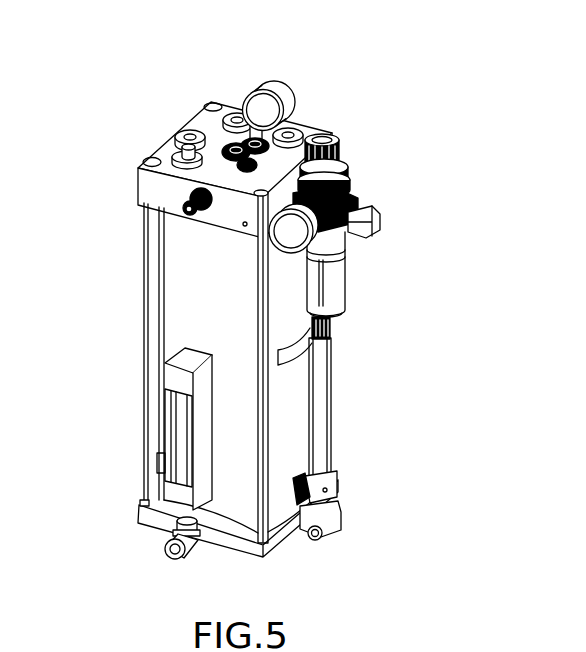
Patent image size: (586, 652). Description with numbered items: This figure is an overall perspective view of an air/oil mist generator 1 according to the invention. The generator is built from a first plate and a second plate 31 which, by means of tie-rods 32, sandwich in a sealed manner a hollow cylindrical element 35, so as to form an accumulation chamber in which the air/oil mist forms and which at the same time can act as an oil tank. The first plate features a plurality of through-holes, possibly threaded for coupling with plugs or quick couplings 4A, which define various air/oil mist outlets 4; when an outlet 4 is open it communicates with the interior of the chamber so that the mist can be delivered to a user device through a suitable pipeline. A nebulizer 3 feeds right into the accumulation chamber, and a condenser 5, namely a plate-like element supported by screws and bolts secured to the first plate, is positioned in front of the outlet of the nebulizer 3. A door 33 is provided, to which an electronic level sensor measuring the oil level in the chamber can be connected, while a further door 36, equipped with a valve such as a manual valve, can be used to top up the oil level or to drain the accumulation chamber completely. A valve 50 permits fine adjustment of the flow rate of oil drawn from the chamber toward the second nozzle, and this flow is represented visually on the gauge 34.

The air/oil mist generator 1 is at (381, 108).
The nebulizer 3 is at (239, 113).
The air/oil mist outlets 4 is at (187, 128).
The plugs or quick couplings 4A is at (170, 147).
The condenser 5 is at (355, 180).
The second plate 31 is at (275, 538).
The tie-rods 32 is at (152, 422).
The door 33 is at (340, 514).
The gauge 34 is at (186, 404).
The hollow cylindrical element 35 is at (181, 250).
The further door 36 is at (167, 543).
The valve 50 is at (198, 222).